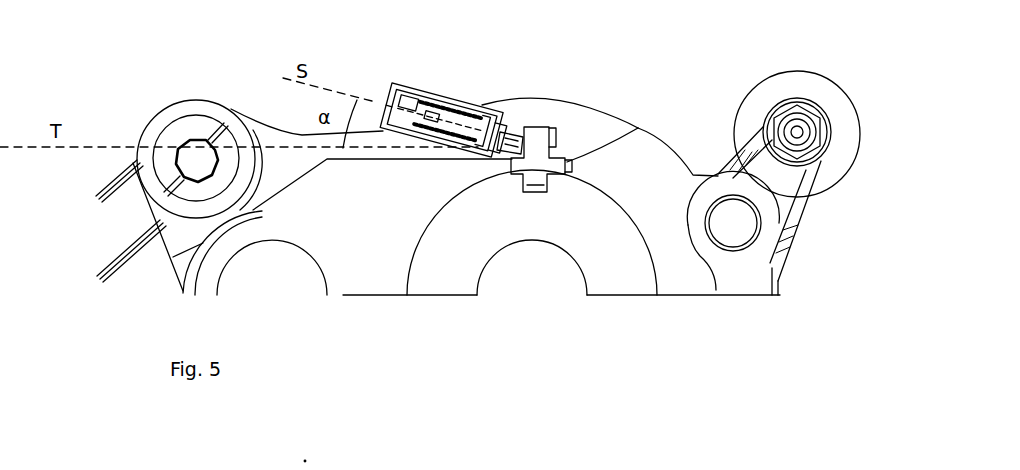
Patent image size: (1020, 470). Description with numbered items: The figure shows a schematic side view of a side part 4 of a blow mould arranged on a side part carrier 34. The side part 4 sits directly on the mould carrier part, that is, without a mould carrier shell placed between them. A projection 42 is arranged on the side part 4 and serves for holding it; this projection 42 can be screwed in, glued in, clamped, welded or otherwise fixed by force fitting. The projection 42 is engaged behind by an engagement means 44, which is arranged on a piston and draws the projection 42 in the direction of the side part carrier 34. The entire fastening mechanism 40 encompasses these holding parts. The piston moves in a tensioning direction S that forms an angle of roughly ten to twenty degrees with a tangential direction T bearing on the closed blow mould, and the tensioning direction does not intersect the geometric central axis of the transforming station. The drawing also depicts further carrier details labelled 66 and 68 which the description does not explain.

The side part 4 is at (617, 277).
The side part carrier 34 is at (693, 277).
The fastening mechanism 40 is at (448, 78).
The projection 42 is at (549, 127).
The engagement means 44 is at (518, 127).
The pulley wheel 66 is at (828, 168).
The bearing ring 68 is at (767, 230).